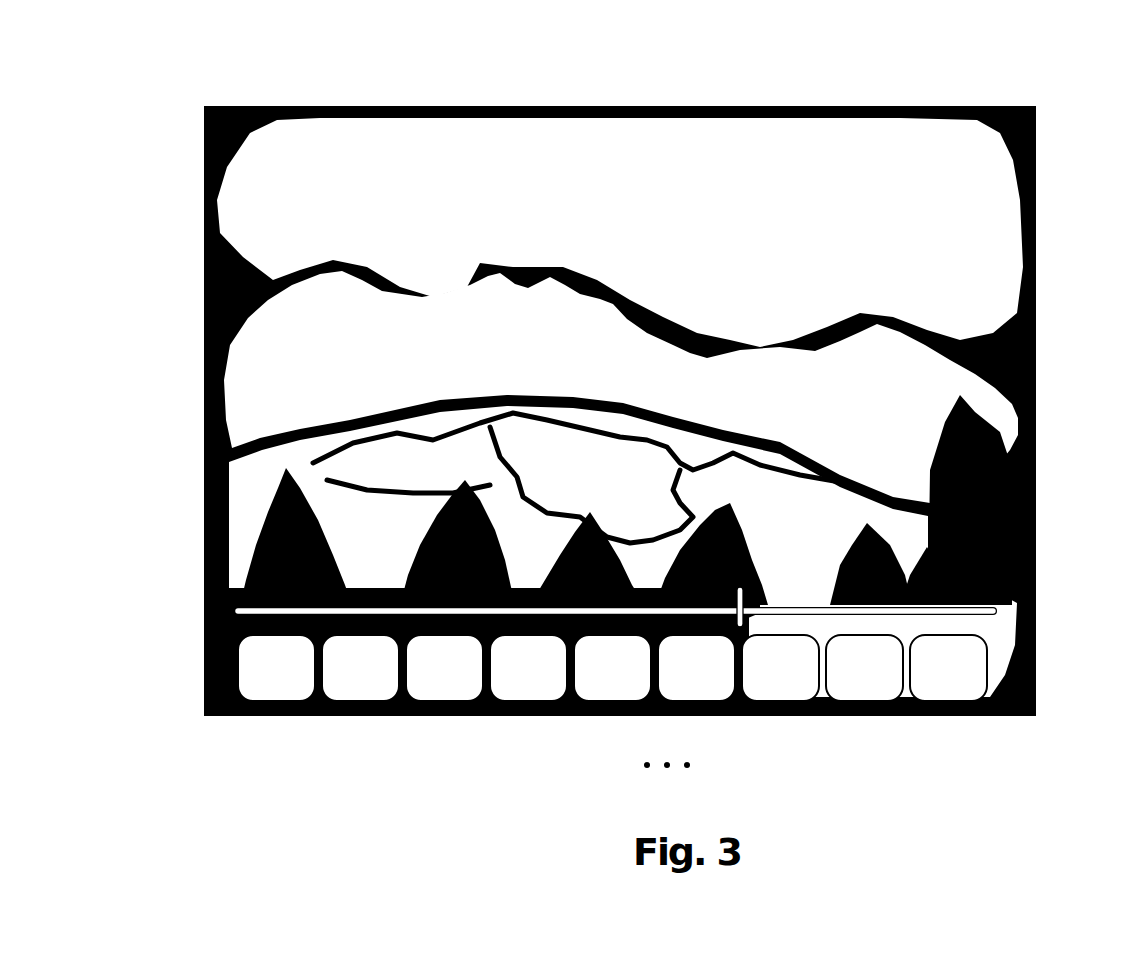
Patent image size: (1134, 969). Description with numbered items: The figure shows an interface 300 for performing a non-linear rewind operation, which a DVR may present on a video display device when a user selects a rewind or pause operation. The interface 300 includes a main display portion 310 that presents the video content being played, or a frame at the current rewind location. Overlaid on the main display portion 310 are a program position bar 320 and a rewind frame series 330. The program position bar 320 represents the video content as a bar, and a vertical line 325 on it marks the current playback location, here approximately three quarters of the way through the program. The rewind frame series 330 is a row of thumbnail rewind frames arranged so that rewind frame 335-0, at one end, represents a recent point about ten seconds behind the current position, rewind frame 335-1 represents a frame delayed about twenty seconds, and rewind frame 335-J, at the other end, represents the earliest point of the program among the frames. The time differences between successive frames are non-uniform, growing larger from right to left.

The interface 300 is at (163, 88).
The main display portion 310 is at (1036, 118).
The program position bar 320 is at (1010, 611).
The vertical line 325 is at (744, 575).
The rewind frame series 330 is at (1010, 667).
The rewind frame 335-J is at (281, 702).
The rewind frame 335-1 is at (870, 702).
The rewind frame 335-0 is at (952, 702).